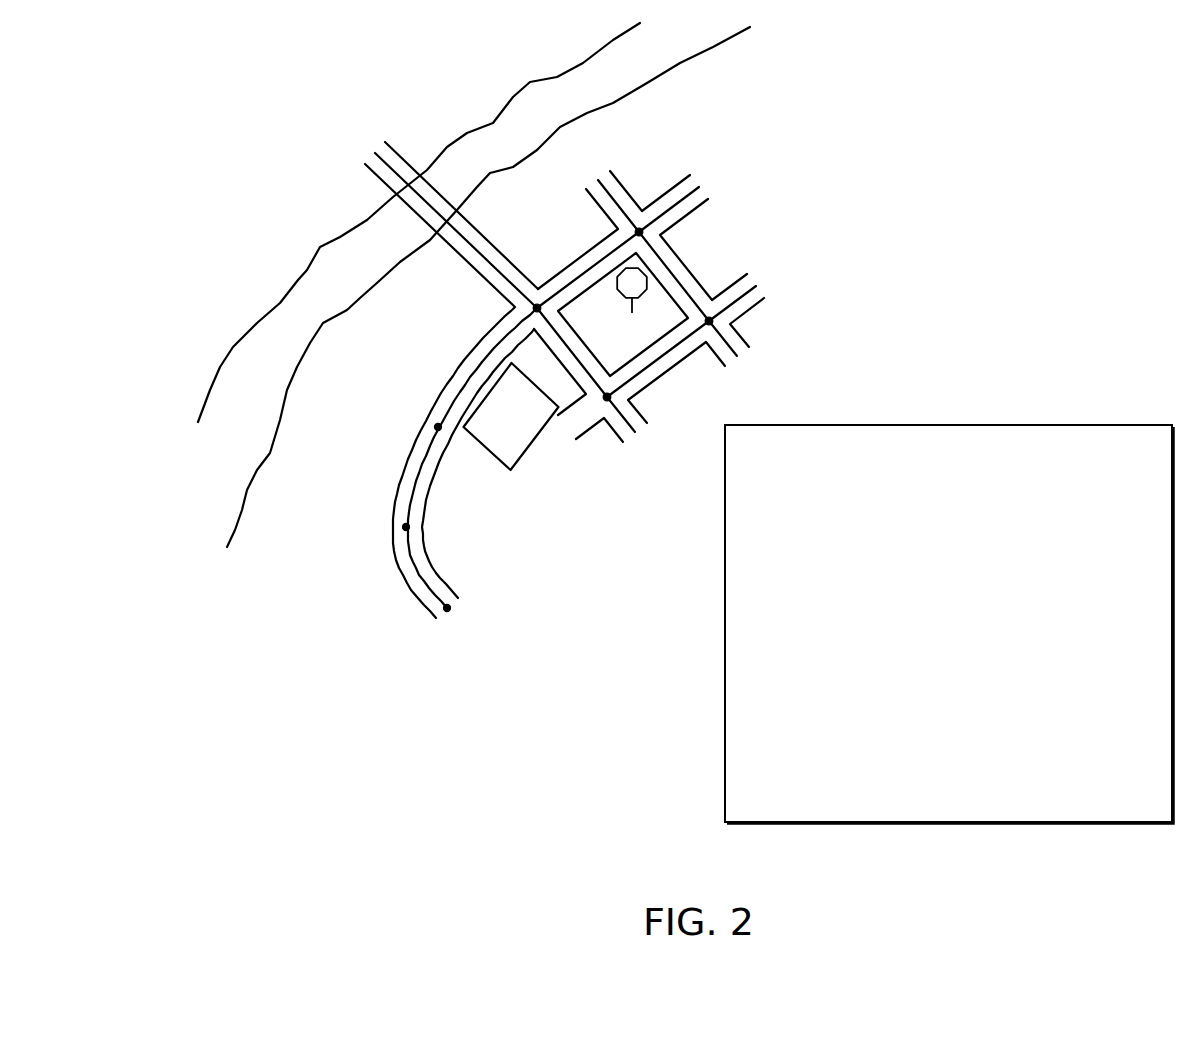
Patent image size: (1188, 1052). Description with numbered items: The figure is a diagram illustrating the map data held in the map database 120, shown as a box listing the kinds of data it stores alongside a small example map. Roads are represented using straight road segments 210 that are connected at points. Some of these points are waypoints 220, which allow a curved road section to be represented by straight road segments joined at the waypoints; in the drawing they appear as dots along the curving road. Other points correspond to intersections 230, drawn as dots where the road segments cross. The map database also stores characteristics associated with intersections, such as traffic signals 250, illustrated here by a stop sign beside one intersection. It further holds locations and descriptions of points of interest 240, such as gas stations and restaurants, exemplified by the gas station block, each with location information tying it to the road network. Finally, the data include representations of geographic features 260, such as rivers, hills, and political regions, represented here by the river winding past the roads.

The map database 120 is at (1100, 425).
The road segments 210 is at (452, 387).
The waypoints 220 is at (438, 427).
The intersections 230 is at (538, 304).
The points of interest 240 is at (527, 452).
The traffic signals 250 is at (647, 283).
The geographic features 260 is at (288, 298).